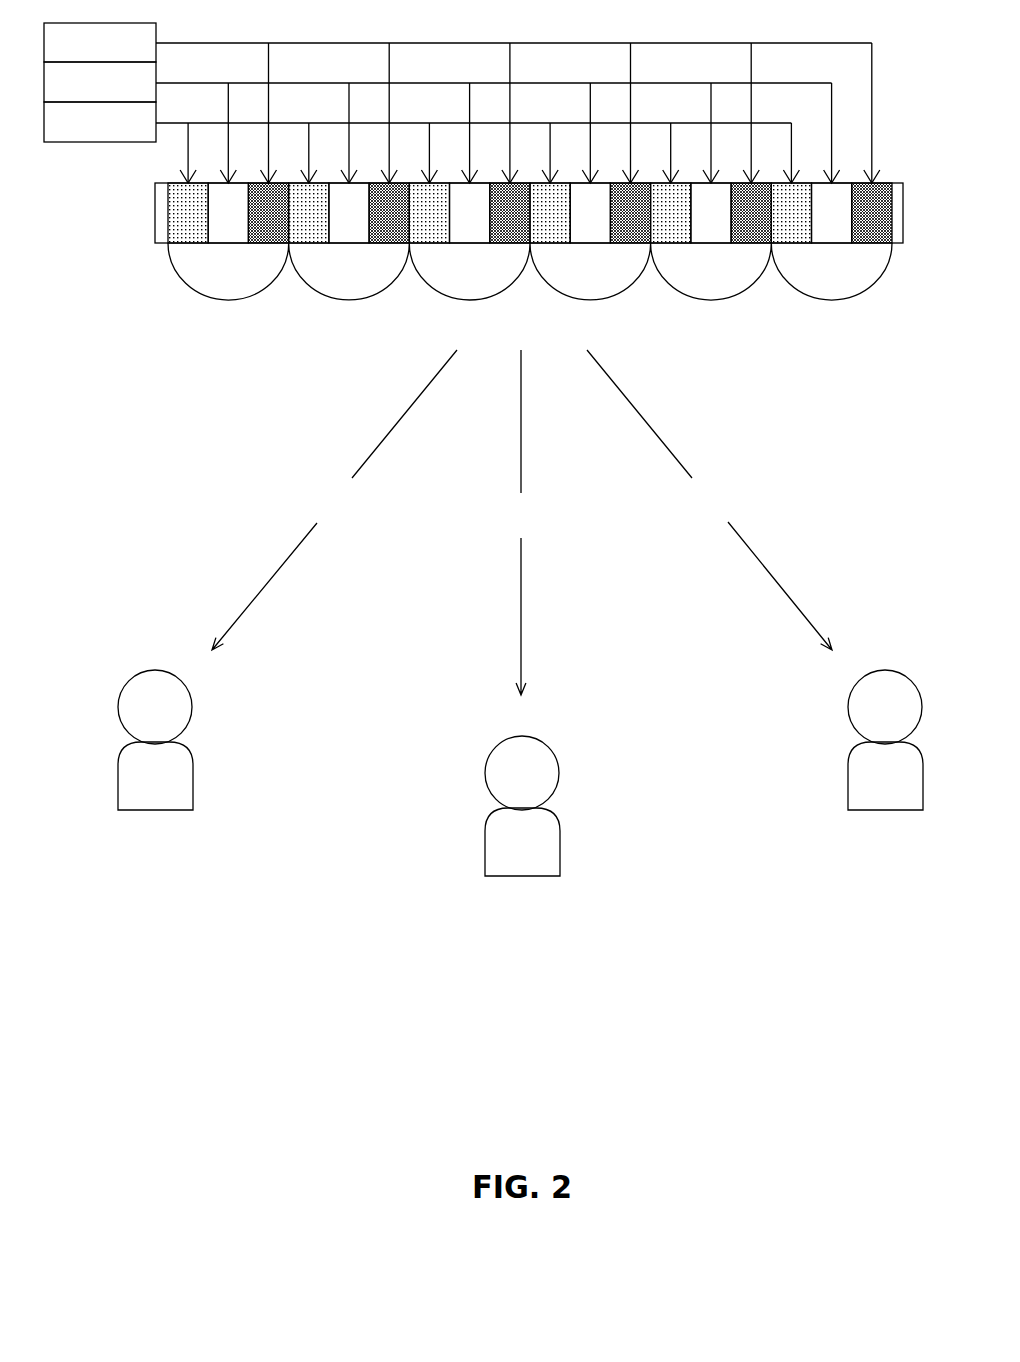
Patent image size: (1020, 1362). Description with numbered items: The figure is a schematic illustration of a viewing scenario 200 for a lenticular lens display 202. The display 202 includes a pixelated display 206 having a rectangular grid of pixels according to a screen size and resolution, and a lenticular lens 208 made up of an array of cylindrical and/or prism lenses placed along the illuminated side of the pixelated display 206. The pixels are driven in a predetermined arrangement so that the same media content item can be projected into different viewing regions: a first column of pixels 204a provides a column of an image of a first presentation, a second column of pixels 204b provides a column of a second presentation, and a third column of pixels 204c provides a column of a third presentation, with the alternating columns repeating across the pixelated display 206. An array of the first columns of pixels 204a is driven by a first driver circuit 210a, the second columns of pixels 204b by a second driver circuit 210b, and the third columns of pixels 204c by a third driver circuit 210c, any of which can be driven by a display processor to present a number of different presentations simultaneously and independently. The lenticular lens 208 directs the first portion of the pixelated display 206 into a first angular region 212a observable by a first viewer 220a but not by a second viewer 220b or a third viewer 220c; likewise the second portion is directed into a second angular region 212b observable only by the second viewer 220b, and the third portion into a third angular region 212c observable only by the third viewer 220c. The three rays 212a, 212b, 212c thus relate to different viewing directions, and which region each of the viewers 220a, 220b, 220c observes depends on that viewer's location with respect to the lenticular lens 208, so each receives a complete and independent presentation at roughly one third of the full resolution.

The viewing scenario 200 is at (550, 1157).
The lenticular lens display 202 is at (514, 294).
The first column of pixels 204a is at (790, 243).
The second column of pixels 204b is at (825, 243).
The third column of pixels 204c is at (862, 243).
The pixelated display 206 is at (514, 282).
The lenticular lens 208 is at (340, 300).
The first driver circuit 210a is at (128, 59).
The second driver circuit 210b is at (128, 99).
The third driver circuit 210c is at (128, 139).
The first angular region 212a is at (334, 500).
The second angular region 212b is at (526, 522).
The third angular region 212c is at (709, 500).
The first viewer 220a is at (183, 789).
The second viewer 220b is at (550, 855).
The third viewer 220c is at (913, 789).